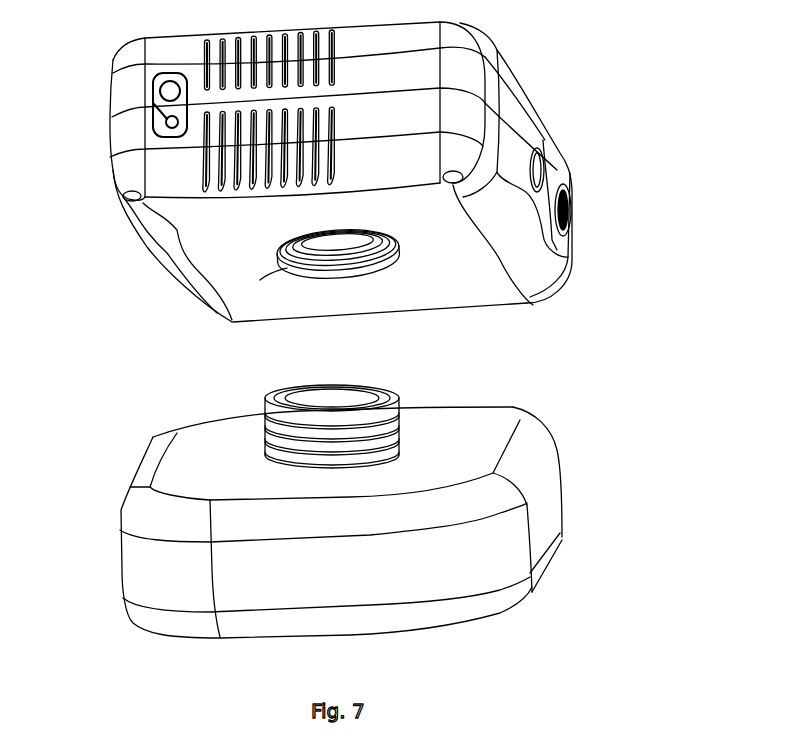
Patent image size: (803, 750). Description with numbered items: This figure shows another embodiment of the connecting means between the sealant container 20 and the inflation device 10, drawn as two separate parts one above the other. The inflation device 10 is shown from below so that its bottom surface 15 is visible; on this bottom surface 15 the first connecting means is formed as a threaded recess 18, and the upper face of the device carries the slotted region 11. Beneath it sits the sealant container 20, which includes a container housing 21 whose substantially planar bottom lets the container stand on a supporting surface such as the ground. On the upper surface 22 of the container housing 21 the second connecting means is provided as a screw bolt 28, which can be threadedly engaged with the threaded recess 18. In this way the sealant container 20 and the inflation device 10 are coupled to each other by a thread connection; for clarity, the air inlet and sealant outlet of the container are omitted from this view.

The inflation device 10 is at (372, 189).
The vent slots 11 is at (370, 88).
The bottom surface 15 is at (427, 287).
The threaded recess 18 is at (297, 247).
The sealant container 20 is at (362, 486).
The container housing 21 is at (323, 583).
The upper surface 22 is at (453, 420).
The screw bolt 28 is at (262, 413).